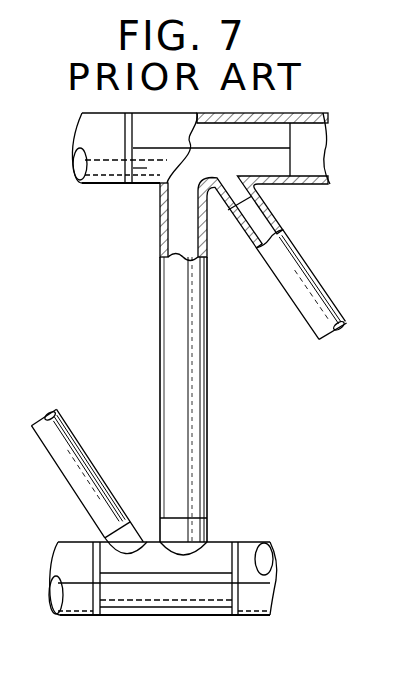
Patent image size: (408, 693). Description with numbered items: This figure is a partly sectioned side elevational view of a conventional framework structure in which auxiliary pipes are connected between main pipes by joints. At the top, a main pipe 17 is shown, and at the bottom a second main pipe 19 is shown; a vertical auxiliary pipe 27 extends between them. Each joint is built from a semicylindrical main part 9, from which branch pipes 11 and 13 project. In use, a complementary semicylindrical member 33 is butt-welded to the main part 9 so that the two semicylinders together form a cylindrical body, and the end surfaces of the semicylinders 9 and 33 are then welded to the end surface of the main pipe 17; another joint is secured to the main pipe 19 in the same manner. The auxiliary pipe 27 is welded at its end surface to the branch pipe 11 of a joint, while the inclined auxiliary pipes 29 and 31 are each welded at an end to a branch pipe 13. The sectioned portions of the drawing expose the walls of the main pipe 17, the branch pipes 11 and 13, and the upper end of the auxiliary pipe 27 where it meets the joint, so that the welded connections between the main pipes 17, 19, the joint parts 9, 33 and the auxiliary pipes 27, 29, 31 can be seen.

The main pipe 17 is at (85, 132).
The main part 9 is at (140, 168).
The complementary semicylindrical member 33 is at (167, 132).
The branch pipe 13 is at (160, 248).
The branch pipe 11 is at (230, 210).
The auxiliary pipe 27 is at (165, 344).
The auxiliary pipe 29 is at (322, 267).
The auxiliary pipe 31 is at (98, 463).
The main pipe 19 is at (75, 613).